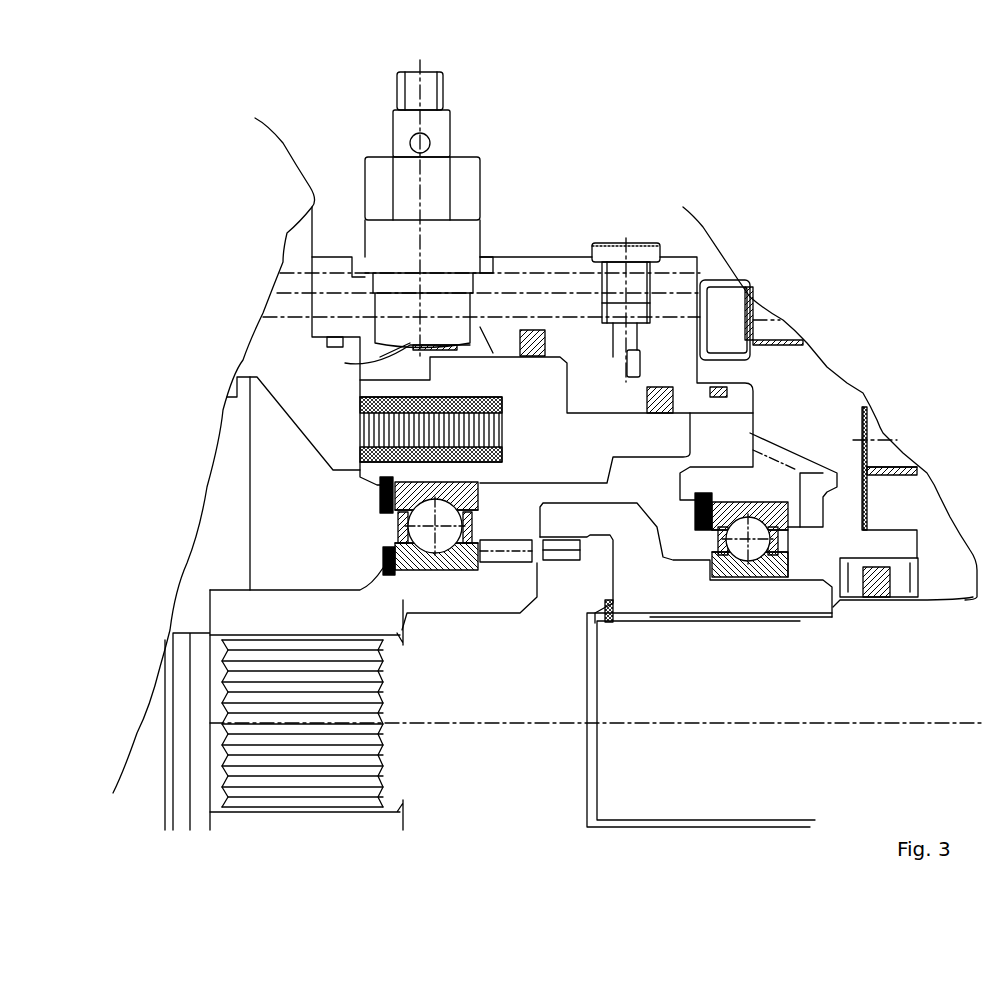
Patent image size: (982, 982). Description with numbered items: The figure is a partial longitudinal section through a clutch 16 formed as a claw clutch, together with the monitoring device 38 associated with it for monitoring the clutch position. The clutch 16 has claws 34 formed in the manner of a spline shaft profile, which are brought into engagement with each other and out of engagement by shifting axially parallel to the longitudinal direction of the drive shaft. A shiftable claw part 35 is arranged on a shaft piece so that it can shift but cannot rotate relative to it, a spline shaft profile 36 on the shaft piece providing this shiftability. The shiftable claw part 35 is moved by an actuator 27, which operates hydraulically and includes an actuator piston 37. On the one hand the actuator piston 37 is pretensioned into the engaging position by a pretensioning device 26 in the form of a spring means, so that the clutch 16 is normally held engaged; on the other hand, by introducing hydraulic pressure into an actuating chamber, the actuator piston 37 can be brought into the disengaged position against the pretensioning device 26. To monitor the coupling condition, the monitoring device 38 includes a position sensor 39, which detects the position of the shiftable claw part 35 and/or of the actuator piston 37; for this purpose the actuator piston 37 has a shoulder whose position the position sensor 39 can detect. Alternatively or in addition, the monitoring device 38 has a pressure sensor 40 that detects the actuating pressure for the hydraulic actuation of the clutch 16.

The clutch 16 is at (542, 672).
The pretensioning device 26 is at (352, 445).
The actuator 27 is at (570, 331).
The claws 34 is at (567, 548).
The shiftable claw part 35 is at (478, 600).
The spline shaft profile 36 is at (380, 650).
The actuator piston 37 is at (580, 460).
The monitoring device 38 is at (340, 228).
The position sensor 39 is at (352, 365).
The pressure sensor 40 is at (637, 353).